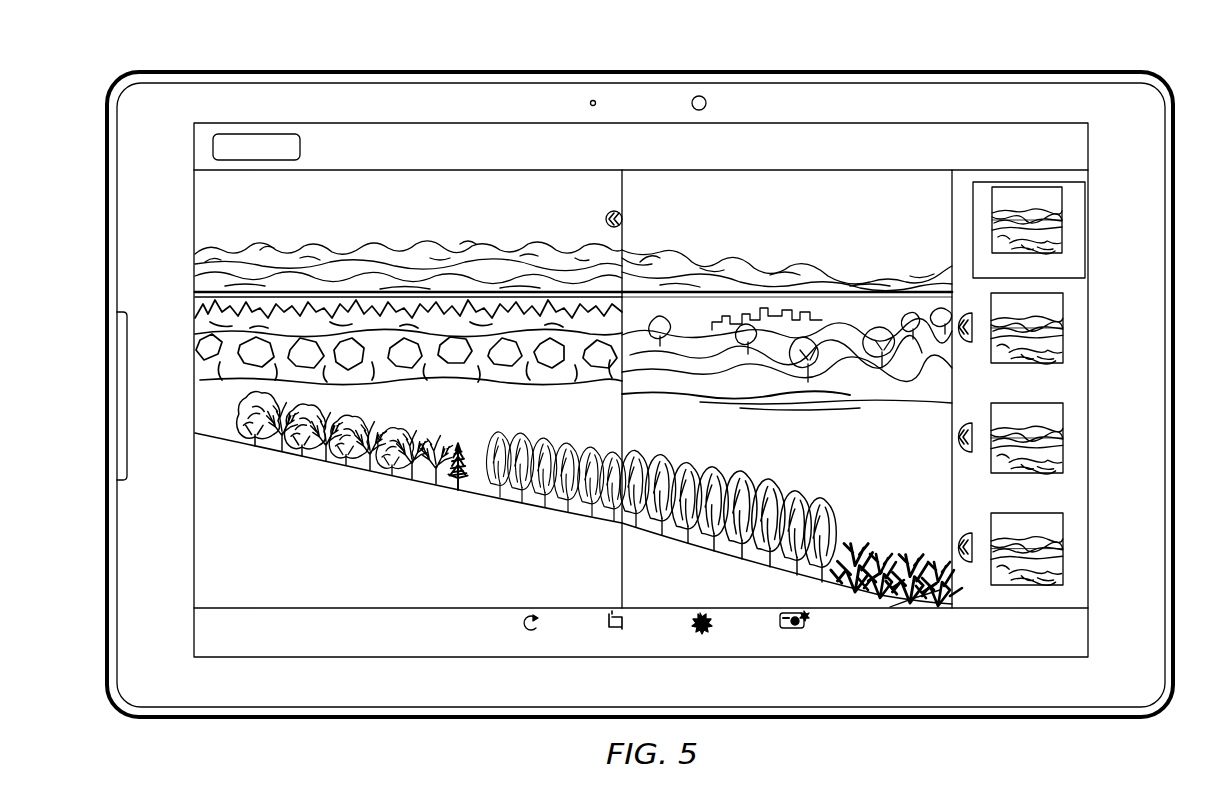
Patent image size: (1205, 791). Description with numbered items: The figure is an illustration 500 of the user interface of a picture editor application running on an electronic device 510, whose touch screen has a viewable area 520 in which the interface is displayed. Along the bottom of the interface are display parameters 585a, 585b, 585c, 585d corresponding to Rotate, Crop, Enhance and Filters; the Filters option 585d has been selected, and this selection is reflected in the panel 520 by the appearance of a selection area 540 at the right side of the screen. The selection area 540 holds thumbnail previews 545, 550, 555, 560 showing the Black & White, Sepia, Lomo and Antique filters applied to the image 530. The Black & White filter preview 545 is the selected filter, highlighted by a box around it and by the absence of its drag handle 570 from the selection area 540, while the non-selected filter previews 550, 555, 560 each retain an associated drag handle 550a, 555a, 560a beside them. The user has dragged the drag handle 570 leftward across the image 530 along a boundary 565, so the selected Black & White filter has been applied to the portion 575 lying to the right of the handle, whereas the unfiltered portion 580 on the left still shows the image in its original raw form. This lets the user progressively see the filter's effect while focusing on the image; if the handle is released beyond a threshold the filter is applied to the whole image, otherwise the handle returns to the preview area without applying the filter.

The illustration 500 is at (794, 745).
The electronic device 510 is at (1075, 70).
The viewable area 520 is at (1092, 141).
The image 530 is at (791, 350).
The selection area 540 is at (1053, 394).
The Black & White filter preview 545 is at (1070, 228).
The Sepia filter preview 550 is at (1049, 339).
The drag handle 550a is at (969, 342).
The Lomo filter preview 555 is at (1049, 449).
The drag handle 555a is at (969, 452).
The Antique filter preview 560 is at (1049, 559).
The drag handle 560a is at (969, 562).
The divider line 565 is at (622, 193).
The drag handle 570 is at (604, 219).
The portion 575 is at (850, 202).
The unfiltered portion 580 is at (410, 355).
The display parameter 585a is at (531, 658).
The display parameter 585b is at (616, 658).
The display parameter 585c is at (706, 658).
The display parameter 585d is at (794, 658).